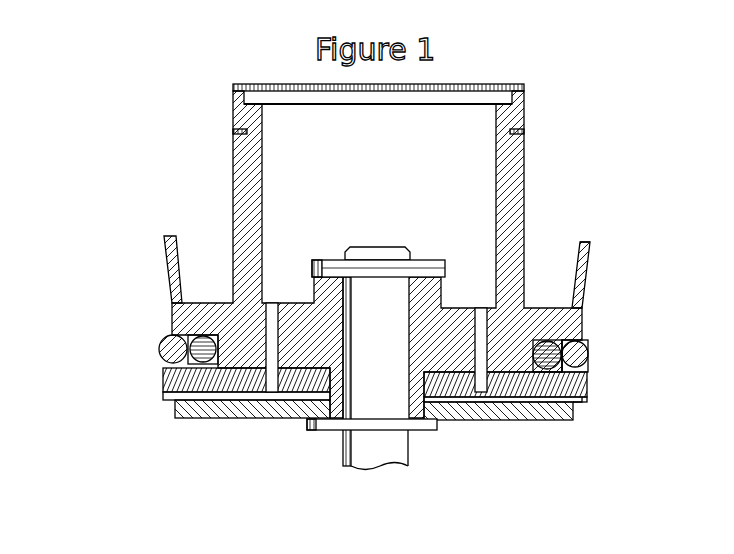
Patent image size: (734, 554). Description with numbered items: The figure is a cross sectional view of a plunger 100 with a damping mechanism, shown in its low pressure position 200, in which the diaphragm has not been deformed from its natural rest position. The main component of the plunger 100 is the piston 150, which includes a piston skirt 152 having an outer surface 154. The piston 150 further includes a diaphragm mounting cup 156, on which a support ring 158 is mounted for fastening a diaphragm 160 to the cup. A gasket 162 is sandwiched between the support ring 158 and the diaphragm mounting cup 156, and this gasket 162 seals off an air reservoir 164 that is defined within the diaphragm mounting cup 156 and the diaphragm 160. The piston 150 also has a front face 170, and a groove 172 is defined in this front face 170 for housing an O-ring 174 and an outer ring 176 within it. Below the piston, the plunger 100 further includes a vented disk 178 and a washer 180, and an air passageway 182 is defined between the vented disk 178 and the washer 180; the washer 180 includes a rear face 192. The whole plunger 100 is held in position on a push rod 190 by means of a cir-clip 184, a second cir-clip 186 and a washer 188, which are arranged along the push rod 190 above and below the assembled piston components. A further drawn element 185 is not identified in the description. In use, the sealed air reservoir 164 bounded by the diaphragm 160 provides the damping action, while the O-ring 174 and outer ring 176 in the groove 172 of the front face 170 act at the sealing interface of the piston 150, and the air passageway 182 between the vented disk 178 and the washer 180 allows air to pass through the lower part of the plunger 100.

The plunger 100 is at (175, 165).
The low pressure position 200 is at (210, 130).
The piston 150 is at (565, 322).
The piston skirt 152 is at (586, 270).
The outer surface 154 is at (590, 243).
The diaphragm mounting cup 156 is at (508, 210).
The support ring 158 is at (520, 120).
The diaphragm 160 is at (524, 87).
The gasket 162 is at (524, 135).
The air reservoir 164 is at (445, 170).
The front face 170 is at (205, 302).
The groove 172 is at (182, 340).
The O-ring 174 is at (573, 352).
The outer ring 176 is at (590, 365).
The vented disk 178 is at (583, 392).
The washer 180 is at (555, 421).
The air passageway 182 is at (583, 402).
The cir-clip 184 is at (437, 428).
The slot 185 is at (273, 308).
The cir-clip 186 is at (340, 265).
The washer 188 is at (445, 278).
The push rod 190 is at (365, 448).
The rear face 192 is at (205, 418).